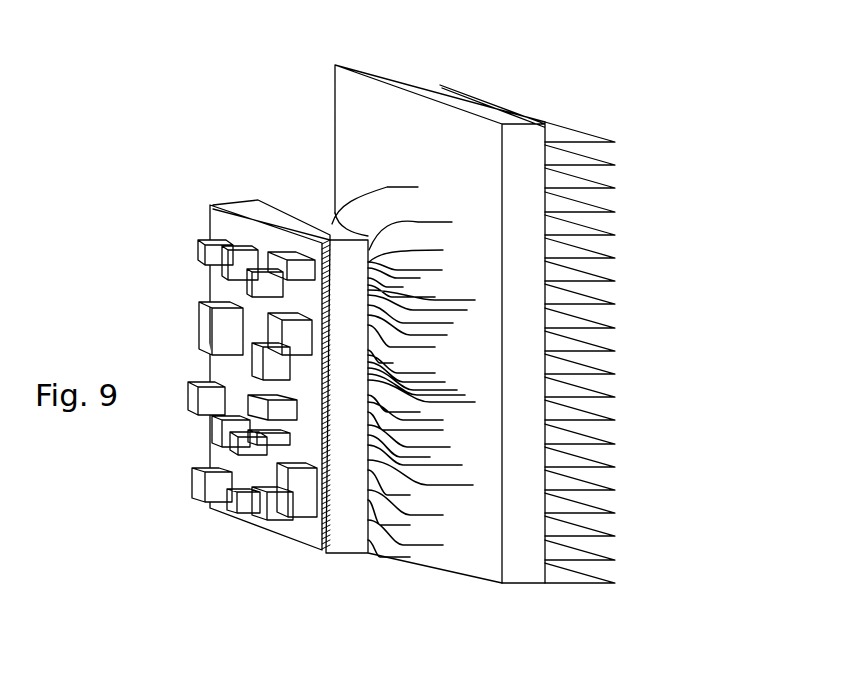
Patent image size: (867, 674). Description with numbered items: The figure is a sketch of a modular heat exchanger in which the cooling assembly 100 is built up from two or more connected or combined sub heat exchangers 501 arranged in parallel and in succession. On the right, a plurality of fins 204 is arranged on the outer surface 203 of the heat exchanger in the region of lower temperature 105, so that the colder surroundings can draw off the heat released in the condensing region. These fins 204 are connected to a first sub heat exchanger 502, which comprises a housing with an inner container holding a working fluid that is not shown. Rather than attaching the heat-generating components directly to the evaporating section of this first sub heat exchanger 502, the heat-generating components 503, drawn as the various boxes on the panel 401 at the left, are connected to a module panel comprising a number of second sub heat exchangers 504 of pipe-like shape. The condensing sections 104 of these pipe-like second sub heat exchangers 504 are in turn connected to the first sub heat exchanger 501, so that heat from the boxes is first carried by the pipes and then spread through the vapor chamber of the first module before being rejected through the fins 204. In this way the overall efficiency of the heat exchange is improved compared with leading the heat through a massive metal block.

The cooling assembly 100 is at (252, 131).
The condensing section 104 is at (416, 222).
The region of lower temperature 105 is at (639, 352).
The outer surface 203 is at (517, 301).
The fins 204 is at (633, 225).
The circuit board with components 401 is at (217, 488).
The sub heat exchanger 501 is at (488, 318).
The first sub heat exchanger 502 is at (400, 82).
The heat-generating components 503 is at (371, 318).
The second sub heat exchangers 504 is at (398, 592).